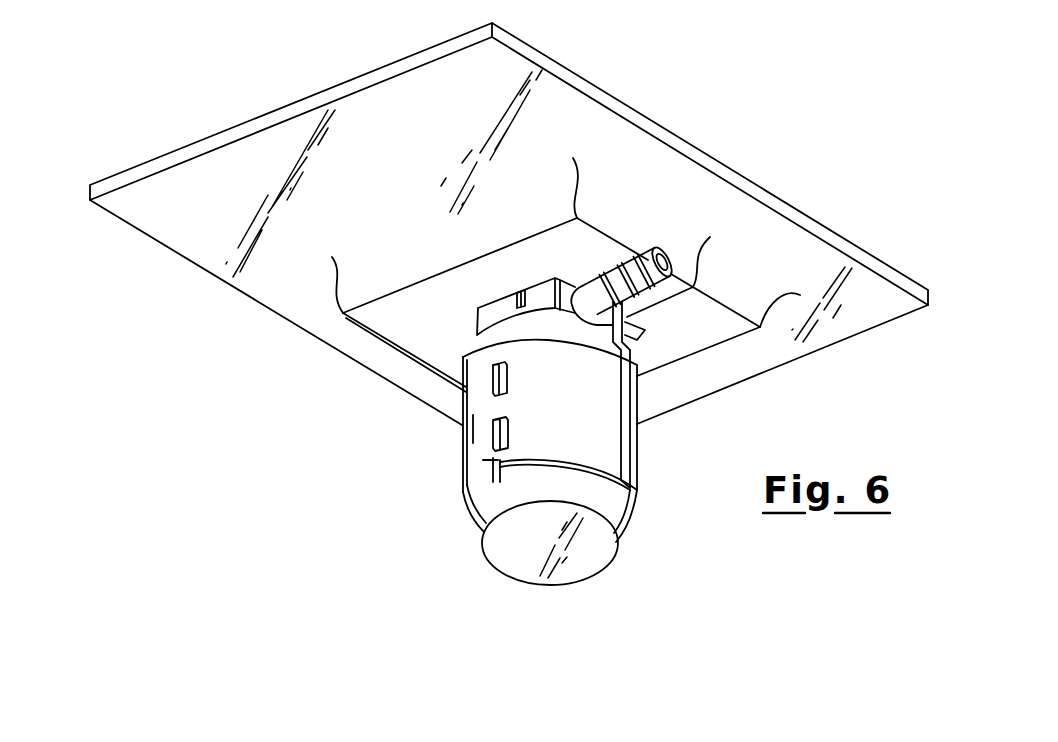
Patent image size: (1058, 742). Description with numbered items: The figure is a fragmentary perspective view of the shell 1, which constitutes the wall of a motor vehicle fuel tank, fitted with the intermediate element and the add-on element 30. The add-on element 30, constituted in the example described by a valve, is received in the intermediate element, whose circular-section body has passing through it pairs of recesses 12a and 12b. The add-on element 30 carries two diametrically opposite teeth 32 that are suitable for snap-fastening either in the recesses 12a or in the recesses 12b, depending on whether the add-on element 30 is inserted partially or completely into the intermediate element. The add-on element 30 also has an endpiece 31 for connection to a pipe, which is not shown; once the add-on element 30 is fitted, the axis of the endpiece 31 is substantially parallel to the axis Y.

The shell 1 is at (387, 134).
The recesses 12a is at (492, 437).
The recesses 12b is at (493, 380).
The add-on element 30 is at (522, 541).
The endpiece 31 is at (666, 262).
The teeth 32 is at (462, 426).